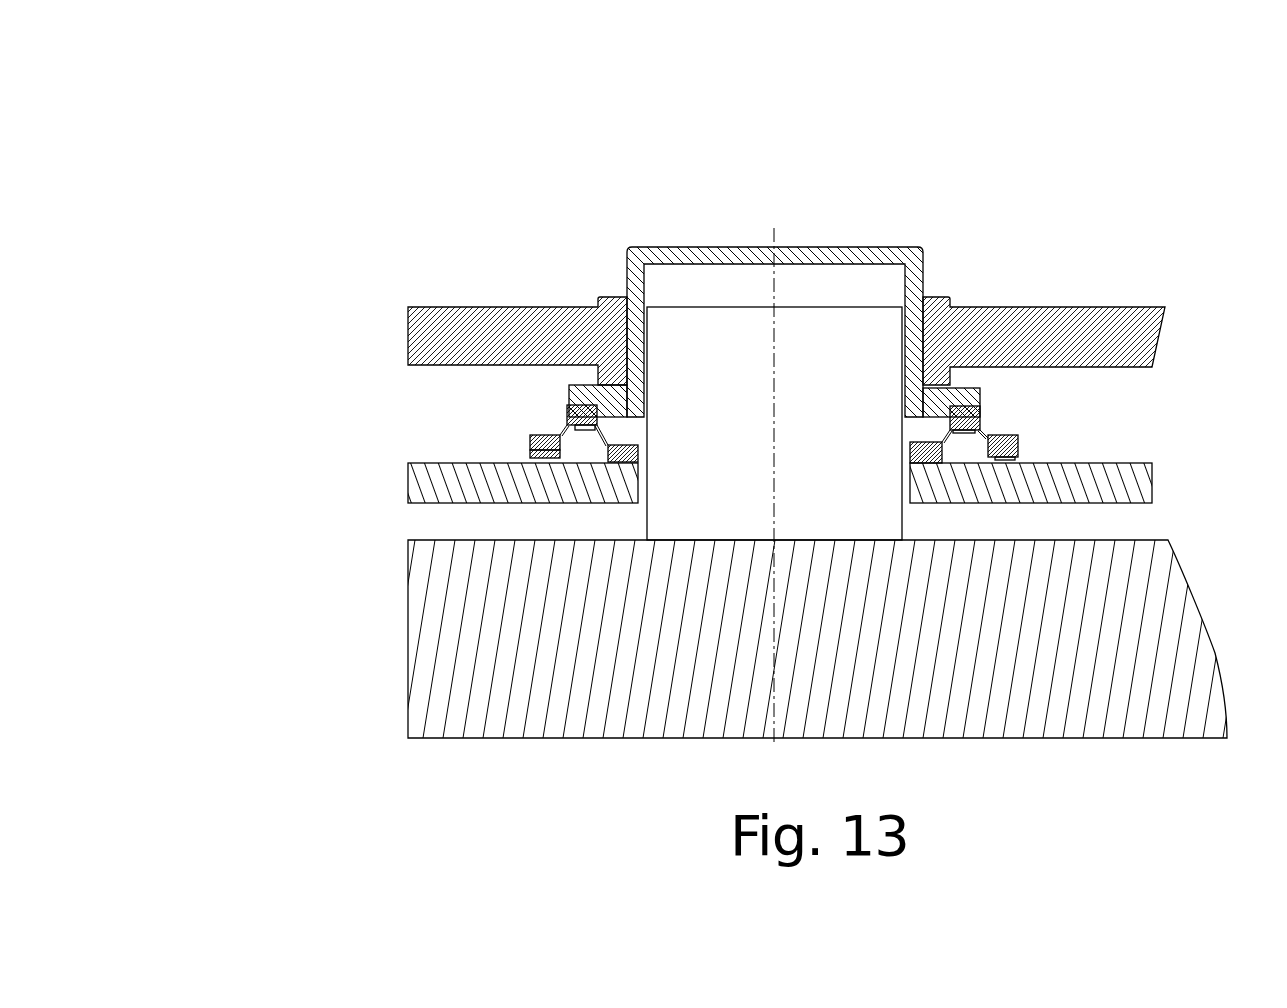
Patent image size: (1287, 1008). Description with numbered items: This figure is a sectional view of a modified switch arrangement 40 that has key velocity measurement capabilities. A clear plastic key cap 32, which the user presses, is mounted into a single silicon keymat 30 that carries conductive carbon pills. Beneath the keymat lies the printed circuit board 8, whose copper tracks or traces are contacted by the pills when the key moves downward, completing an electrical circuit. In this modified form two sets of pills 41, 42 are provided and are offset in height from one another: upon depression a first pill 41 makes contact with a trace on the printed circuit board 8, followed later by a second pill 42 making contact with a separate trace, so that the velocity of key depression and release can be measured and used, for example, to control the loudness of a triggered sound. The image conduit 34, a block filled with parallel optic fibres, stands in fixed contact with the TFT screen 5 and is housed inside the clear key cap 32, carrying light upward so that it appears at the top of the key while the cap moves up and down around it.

The modified switch arrangement 40 is at (689, 402).
The clear key cap 32 is at (627, 258).
The silicon keymat 30 is at (567, 412).
The first pill 41 is at (530, 445).
The second pill 42 is at (527, 457).
The printed circuit board 8 is at (408, 482).
The image conduit 34 is at (643, 518).
The TFT screen 5 is at (724, 639).